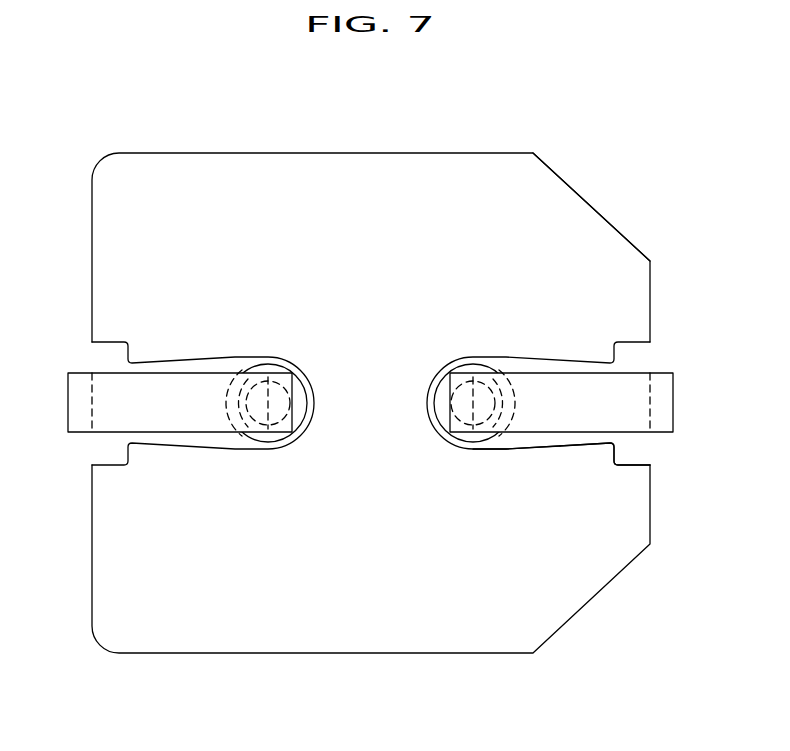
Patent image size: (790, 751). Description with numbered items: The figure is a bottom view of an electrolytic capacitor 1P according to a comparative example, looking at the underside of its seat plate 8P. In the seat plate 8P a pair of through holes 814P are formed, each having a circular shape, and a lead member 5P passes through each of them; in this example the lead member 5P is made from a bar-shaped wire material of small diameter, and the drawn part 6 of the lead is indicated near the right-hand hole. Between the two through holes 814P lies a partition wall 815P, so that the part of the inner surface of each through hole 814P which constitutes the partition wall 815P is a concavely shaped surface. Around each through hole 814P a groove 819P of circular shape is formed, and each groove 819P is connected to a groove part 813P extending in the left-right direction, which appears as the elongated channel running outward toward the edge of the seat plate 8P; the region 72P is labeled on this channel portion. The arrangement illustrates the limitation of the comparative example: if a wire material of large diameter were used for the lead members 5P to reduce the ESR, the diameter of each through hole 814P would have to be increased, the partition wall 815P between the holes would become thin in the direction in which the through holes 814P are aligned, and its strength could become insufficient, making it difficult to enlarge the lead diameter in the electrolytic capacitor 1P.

The electrolytic capacitor 1P is at (577, 138).
The seat plate 8P is at (593, 206).
The lead member 5P is at (500, 351).
The plate portion 72P is at (602, 392).
The screw hole 6 is at (503, 399).
The partition wall 815P is at (365, 382).
The through hole 814P is at (444, 412).
The groove 819P is at (488, 447).
The groove part 813P is at (573, 437).